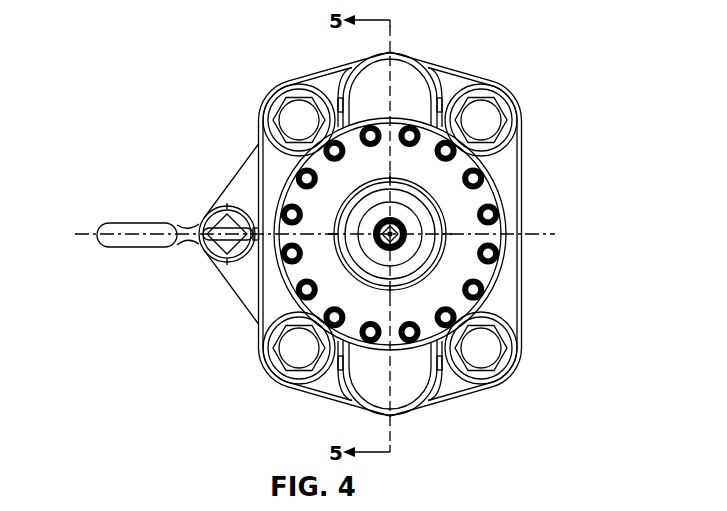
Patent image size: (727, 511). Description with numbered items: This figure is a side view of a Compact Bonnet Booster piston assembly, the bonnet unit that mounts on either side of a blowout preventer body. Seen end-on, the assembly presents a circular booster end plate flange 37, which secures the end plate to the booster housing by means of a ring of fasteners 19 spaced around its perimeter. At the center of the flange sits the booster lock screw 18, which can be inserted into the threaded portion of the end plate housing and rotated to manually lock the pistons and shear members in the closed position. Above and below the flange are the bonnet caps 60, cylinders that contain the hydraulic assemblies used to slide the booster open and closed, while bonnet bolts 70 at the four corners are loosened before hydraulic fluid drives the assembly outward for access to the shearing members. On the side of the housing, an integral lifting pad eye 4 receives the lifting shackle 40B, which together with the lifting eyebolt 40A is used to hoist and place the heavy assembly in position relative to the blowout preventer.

The lifting pad eye 4 is at (250, 167).
The booster lock screw 18 is at (408, 242).
The fasteners 19 is at (476, 176).
The booster end plate flange 37 is at (497, 243).
The lifting eyebolt 40A is at (200, 223).
The lifting shackle 40B is at (137, 249).
The bonnet caps 60 is at (403, 83).
The bonnet bolts 70 is at (302, 108).